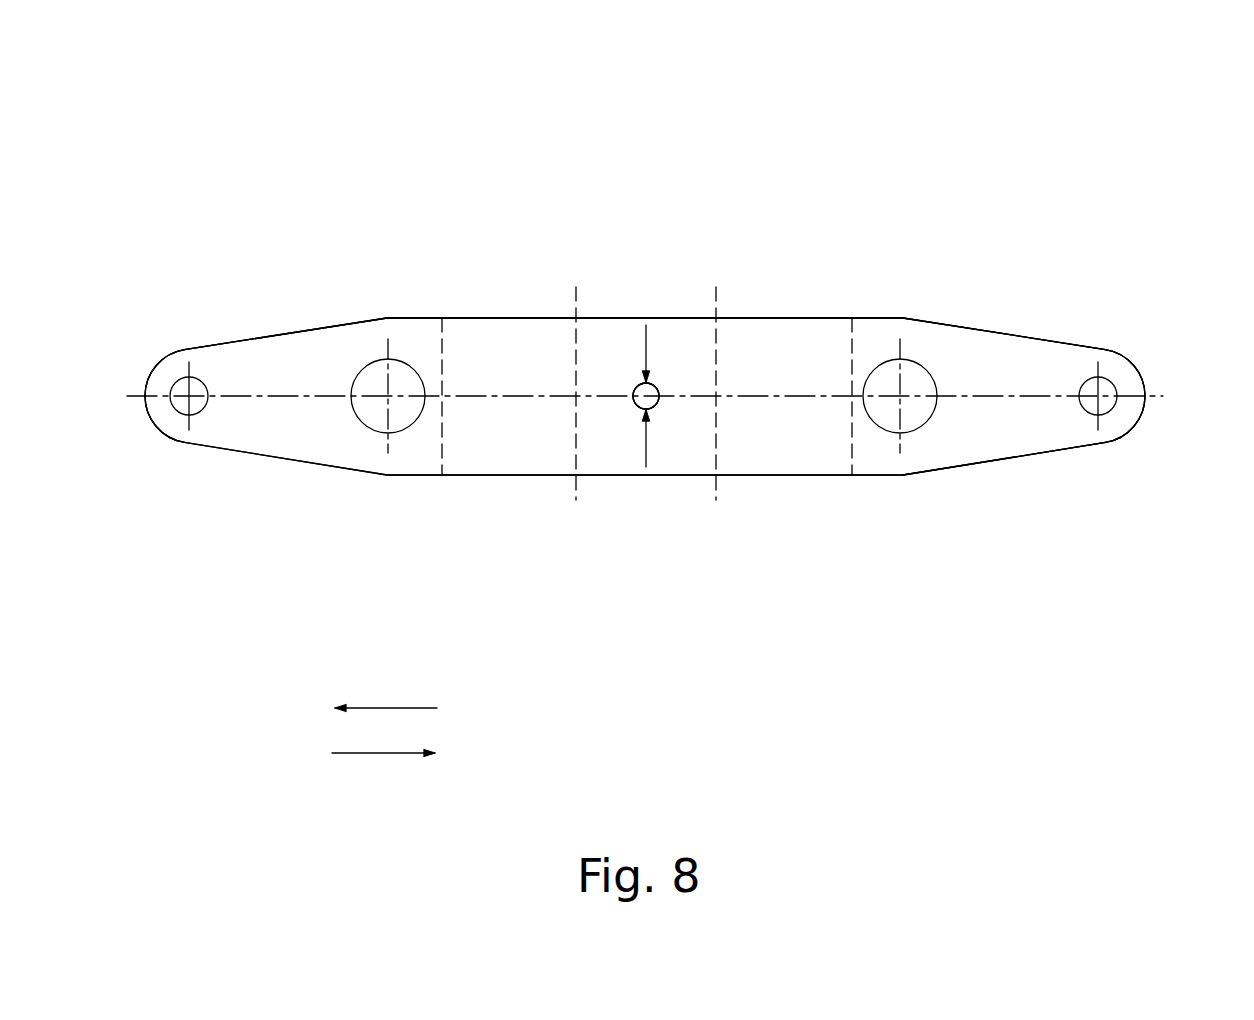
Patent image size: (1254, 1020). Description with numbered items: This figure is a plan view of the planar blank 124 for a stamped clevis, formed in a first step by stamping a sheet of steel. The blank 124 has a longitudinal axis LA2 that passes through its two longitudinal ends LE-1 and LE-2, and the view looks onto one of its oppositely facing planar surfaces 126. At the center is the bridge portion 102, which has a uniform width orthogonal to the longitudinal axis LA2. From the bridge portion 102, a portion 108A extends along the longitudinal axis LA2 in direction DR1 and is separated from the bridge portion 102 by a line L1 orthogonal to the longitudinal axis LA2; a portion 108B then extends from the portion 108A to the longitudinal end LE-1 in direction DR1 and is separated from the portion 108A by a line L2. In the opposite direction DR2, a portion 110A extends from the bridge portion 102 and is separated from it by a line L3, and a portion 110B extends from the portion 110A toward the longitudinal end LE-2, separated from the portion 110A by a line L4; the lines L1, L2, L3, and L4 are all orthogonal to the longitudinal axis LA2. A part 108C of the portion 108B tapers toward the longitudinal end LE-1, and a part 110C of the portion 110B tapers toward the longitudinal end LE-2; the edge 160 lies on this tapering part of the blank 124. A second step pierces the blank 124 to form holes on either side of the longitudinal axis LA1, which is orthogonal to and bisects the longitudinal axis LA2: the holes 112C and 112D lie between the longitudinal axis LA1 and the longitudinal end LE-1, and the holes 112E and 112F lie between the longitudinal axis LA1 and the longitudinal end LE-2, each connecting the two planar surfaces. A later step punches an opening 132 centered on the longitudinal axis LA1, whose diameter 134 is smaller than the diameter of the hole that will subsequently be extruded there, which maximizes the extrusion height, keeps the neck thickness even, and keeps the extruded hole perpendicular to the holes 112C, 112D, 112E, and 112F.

The bridge portion 102 is at (625, 477).
The blank 124 is at (1002, 160).
The planar surface 126 is at (774, 350).
The opening 132 is at (646, 396).
The diameter 134 is at (646, 325).
The tapered edge 160 is at (995, 462).
The portion 108A is at (503, 316).
The portion 108B is at (393, 316).
The part 108C is at (252, 339).
The portion 110A is at (742, 316).
The portion 110B is at (840, 316).
The part 110C is at (1030, 337).
The hole 112C is at (367, 428).
The hole 112D is at (177, 411).
The hole 112E is at (885, 431).
The hole 112F is at (1108, 413).
The line L1 is at (576, 297).
The line L2 is at (442, 350).
The line L3 is at (716, 295).
The line L4 is at (852, 440).
The longitudinal axis LA1 is at (646, 396).
The longitudinal axis LA2 is at (307, 397).
The longitudinal end LE-1 is at (142, 396).
The longitudinal end LE-2 is at (1148, 396).
The direction DR1 is at (390, 708).
The direction DR2 is at (378, 753).